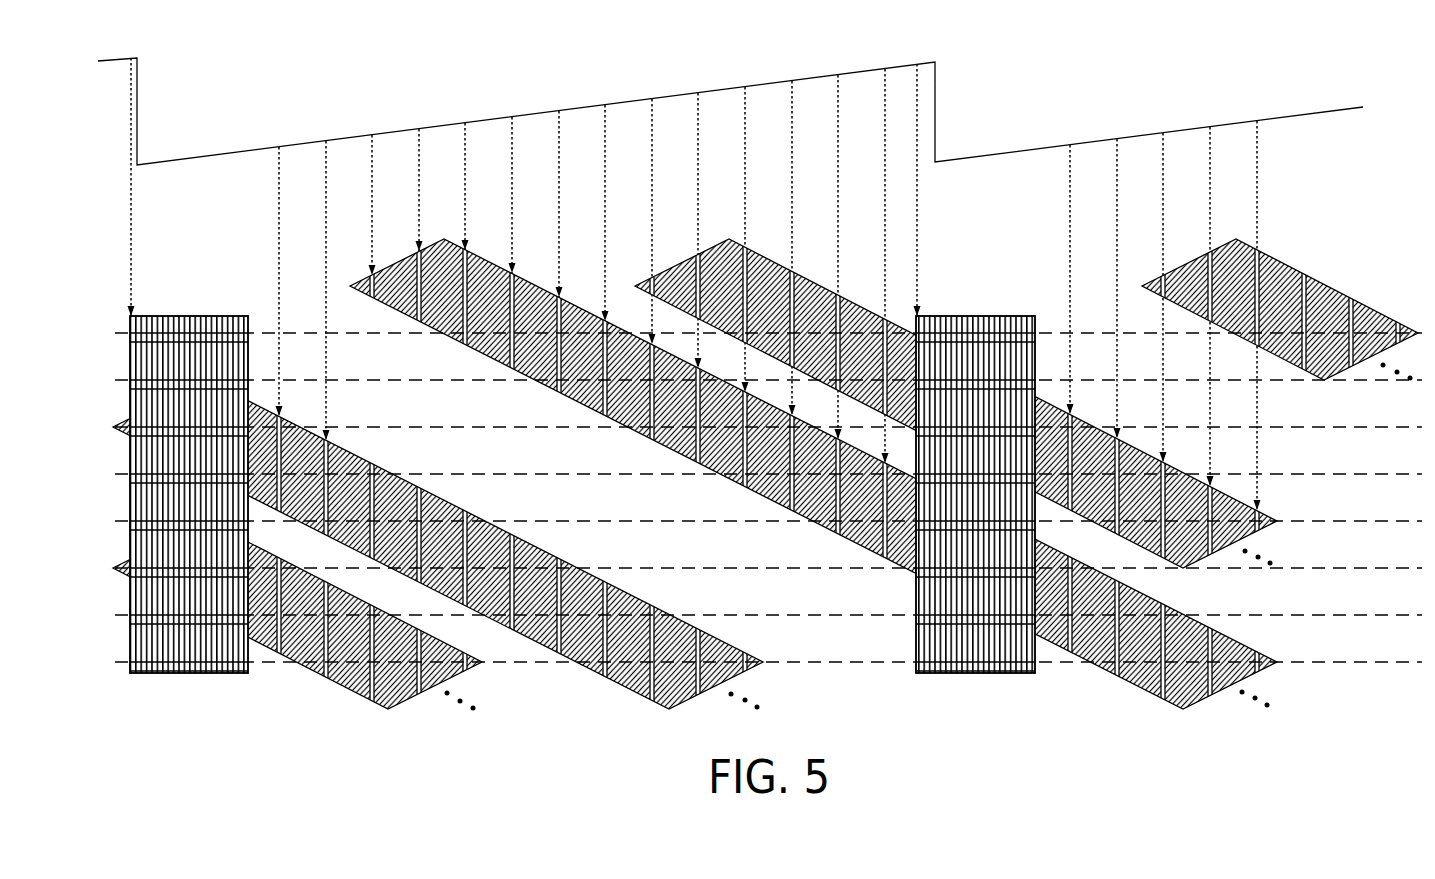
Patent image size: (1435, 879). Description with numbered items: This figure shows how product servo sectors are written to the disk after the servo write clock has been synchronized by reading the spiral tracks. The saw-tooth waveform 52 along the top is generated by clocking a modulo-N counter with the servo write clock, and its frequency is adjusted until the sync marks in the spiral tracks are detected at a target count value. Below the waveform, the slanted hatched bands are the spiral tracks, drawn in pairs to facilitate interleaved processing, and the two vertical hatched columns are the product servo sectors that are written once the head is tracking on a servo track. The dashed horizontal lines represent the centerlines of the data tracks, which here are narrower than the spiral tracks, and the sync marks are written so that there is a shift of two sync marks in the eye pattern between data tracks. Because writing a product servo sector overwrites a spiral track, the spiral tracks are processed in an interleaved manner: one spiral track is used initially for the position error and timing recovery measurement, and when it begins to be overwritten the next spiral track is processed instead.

The saw-tooth waveform 52 is at (579, 105).